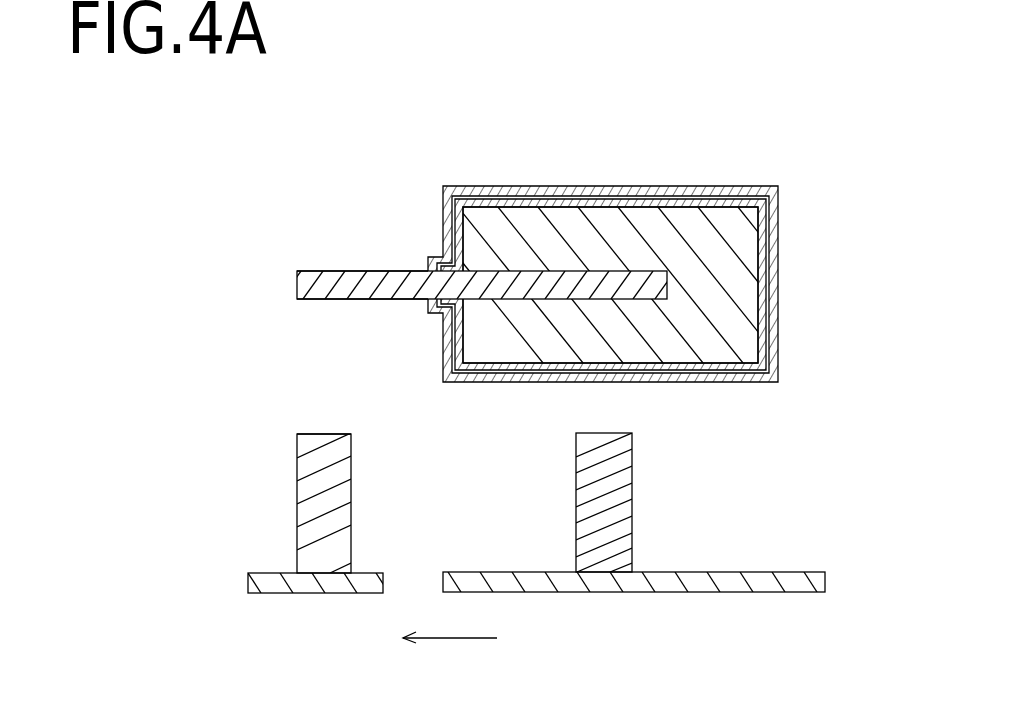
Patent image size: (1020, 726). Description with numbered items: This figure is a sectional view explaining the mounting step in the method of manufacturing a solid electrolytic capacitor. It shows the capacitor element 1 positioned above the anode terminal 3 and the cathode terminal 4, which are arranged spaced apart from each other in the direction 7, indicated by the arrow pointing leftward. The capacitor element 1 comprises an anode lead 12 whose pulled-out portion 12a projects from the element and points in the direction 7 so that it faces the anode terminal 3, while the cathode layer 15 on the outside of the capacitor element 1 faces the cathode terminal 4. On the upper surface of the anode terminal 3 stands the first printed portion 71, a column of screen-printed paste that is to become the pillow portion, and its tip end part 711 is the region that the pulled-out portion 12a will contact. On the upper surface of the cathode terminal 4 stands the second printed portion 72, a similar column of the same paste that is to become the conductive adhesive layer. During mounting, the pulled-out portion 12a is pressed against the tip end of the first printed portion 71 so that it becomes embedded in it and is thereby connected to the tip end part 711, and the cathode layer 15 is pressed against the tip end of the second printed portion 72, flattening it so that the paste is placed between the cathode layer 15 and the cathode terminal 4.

The capacitor element 1 is at (779, 183).
The anode lead 12 is at (570, 283).
The pulled-out portion 12a is at (316, 270).
The cathode layer 15 is at (733, 374).
The first printed portion 71 is at (325, 503).
The tip end part 711 is at (298, 447).
The second printed portion 72 is at (605, 503).
The anode terminal 3 is at (265, 582).
The cathode terminal 4 is at (733, 580).
The direction 7 is at (445, 652).